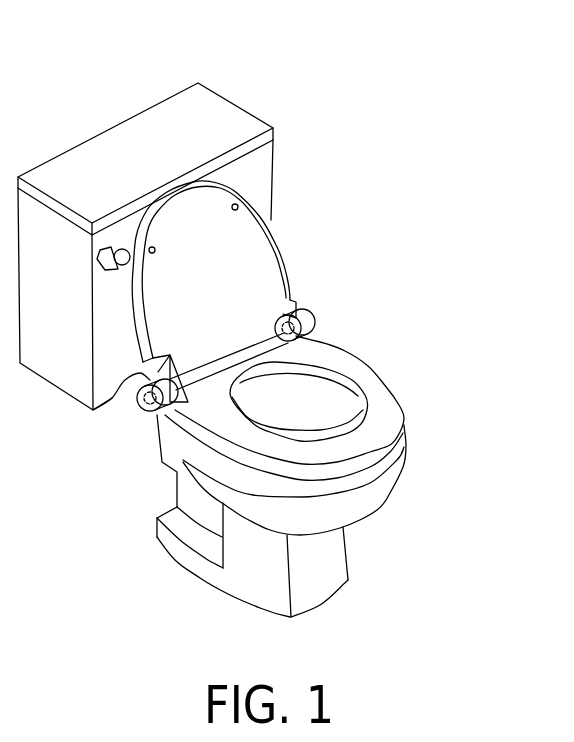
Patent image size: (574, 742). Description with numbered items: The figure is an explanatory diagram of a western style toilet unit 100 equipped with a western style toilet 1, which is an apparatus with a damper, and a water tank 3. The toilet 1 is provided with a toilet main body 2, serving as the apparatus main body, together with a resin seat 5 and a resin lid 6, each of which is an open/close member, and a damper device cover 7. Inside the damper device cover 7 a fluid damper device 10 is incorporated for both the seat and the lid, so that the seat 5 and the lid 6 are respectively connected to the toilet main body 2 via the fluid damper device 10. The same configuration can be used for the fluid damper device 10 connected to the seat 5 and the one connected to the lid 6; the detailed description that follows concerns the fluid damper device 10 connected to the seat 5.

The western style toilet unit 100 is at (226, 24).
The western style toilet 1 is at (460, 270).
The toilet main body 2 is at (365, 503).
The water tank 3 is at (192, 115).
The resin seat 5 is at (362, 378).
The resin lid 6 is at (219, 230).
The damper device cover 7 is at (312, 331).
The fluid damper device 10 is at (296, 305).